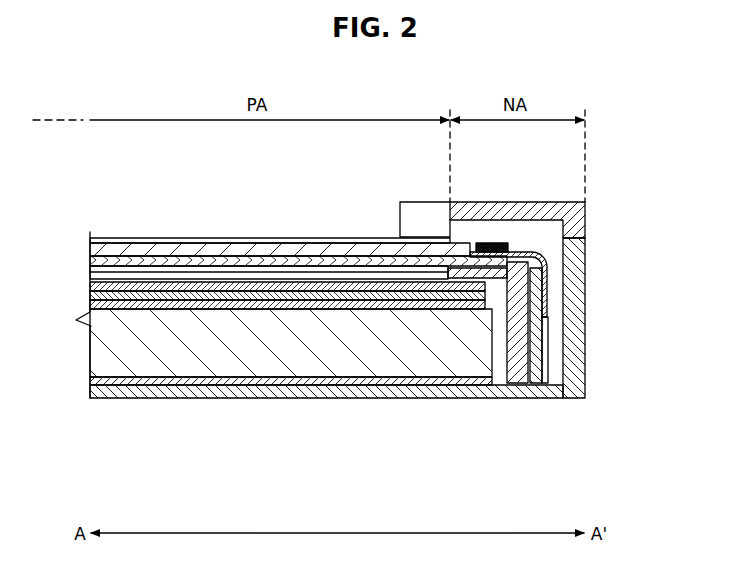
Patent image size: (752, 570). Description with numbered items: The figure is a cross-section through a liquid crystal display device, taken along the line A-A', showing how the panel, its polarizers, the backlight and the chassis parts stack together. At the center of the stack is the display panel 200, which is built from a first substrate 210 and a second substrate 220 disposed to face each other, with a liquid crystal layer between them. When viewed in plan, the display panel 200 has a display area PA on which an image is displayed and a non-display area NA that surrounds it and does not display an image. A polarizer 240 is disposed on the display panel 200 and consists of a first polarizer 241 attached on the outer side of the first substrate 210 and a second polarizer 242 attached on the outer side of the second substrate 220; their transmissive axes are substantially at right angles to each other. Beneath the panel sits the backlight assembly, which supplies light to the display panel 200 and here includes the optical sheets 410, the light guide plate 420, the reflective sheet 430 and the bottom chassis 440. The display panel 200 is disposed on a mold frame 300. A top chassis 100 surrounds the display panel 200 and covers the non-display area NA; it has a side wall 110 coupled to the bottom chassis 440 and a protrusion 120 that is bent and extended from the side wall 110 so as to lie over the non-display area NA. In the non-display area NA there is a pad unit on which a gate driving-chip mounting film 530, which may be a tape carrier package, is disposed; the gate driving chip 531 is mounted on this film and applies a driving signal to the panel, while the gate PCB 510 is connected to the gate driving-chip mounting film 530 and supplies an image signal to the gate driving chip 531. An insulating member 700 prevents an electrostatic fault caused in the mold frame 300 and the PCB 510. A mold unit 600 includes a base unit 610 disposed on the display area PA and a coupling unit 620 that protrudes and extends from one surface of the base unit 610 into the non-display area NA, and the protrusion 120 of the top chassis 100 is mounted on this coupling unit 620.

The top chassis 100 is at (558, 283).
The side wall 110 is at (607, 309).
The protrusion 120 is at (538, 203).
The display panel 200 is at (298, 206).
The first substrate 210 is at (130, 178).
The second substrate 220 is at (122, 244).
The polarizer 240 is at (270, 212).
The first polarizer 241 is at (262, 178).
The second polarizer 242 is at (255, 241).
The mold frame 300 is at (554, 302).
The optical sheets 410 is at (82, 282).
The light guide plate 420 is at (100, 340).
The reflective sheet 430 is at (100, 380).
The bottom chassis 440 is at (100, 392).
The gate PCB 510 is at (541, 322).
The gate driving-chip mounting film 530 is at (548, 291).
The gate driving chip 531 is at (500, 243).
The mold unit 600 is at (447, 377).
The base unit 610 is at (411, 270).
The coupling unit 620 is at (490, 284).
The insulating member 700 is at (548, 344).